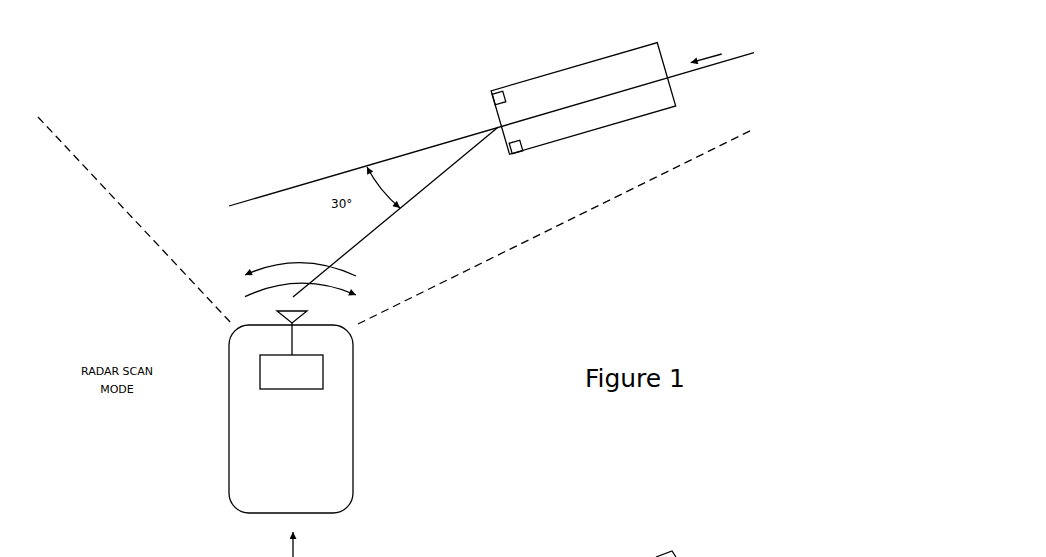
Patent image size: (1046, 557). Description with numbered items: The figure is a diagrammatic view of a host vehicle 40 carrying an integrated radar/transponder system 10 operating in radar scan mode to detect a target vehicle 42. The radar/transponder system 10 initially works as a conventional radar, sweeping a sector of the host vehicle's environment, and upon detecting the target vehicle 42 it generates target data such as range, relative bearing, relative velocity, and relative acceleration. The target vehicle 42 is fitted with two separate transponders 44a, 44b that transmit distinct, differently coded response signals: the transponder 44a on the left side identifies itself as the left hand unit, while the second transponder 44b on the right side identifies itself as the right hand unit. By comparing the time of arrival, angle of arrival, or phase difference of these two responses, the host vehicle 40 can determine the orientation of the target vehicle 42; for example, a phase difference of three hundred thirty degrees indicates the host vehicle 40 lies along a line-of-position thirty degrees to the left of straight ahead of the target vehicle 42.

The target vehicle 42 is at (562, 85).
The transponder 44b is at (490, 98).
The transponder 44a is at (524, 152).
The radar/transponder system 10 is at (308, 371).
The host vehicle 40 is at (335, 450).